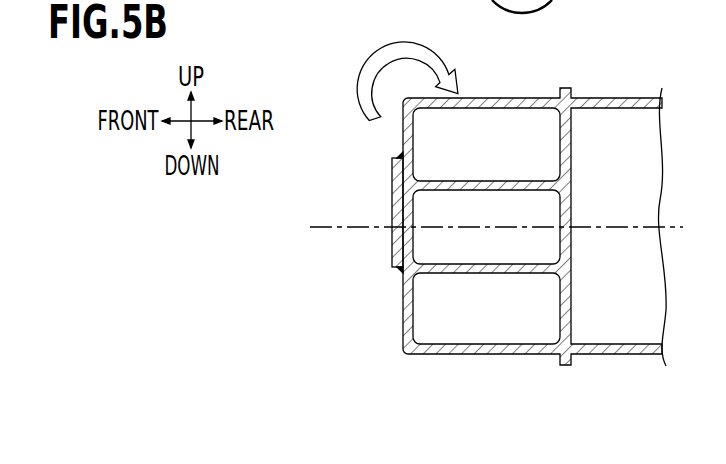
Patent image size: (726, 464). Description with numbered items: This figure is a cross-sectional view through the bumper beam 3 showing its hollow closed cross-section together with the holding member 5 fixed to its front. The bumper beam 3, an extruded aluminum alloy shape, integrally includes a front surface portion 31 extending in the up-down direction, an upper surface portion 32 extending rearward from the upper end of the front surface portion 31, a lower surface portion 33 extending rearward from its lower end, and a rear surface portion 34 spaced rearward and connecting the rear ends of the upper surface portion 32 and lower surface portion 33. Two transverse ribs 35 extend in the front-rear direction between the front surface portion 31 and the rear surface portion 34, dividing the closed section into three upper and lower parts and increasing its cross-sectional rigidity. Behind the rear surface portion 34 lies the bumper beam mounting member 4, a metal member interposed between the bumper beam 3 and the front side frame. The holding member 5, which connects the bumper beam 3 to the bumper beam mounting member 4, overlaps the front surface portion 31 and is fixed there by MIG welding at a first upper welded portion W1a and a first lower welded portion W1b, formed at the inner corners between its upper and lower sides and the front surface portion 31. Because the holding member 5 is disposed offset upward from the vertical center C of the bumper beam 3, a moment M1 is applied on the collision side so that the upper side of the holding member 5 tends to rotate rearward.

The bumper beam 3 is at (532, 98).
The bumper beam mounting member 4 is at (619, 97).
The holding member 5 is at (388, 202).
The front surface portion 31 is at (403, 315).
The upper surface portion 32 is at (500, 97).
The lower surface portion 33 is at (490, 355).
The rear surface portion 34 is at (571, 247).
The transverse rib 35 is at (488, 180).
The vertical center C is at (596, 222).
The moment M1 is at (393, 64).
The first upper welded portion W1a is at (400, 156).
The first lower welded portion W1b is at (398, 268).